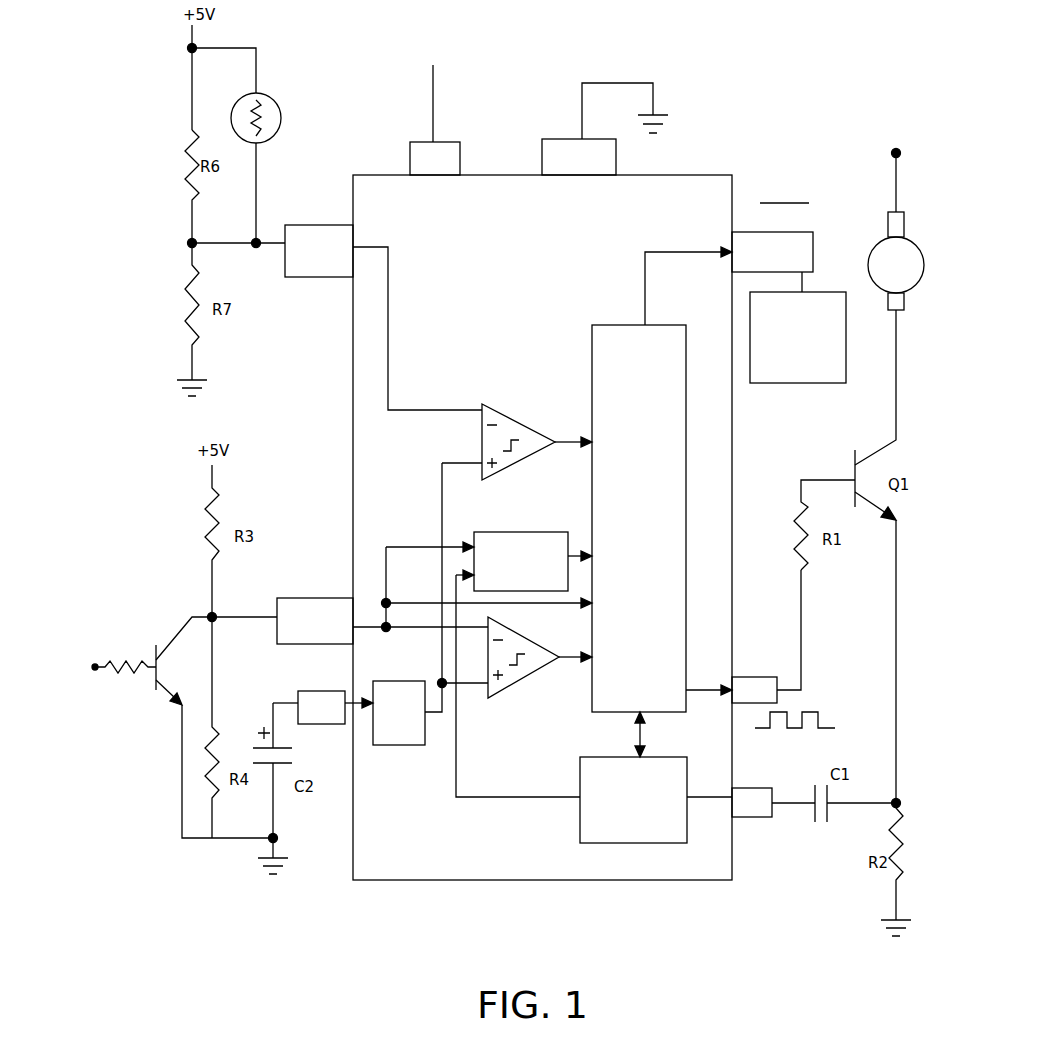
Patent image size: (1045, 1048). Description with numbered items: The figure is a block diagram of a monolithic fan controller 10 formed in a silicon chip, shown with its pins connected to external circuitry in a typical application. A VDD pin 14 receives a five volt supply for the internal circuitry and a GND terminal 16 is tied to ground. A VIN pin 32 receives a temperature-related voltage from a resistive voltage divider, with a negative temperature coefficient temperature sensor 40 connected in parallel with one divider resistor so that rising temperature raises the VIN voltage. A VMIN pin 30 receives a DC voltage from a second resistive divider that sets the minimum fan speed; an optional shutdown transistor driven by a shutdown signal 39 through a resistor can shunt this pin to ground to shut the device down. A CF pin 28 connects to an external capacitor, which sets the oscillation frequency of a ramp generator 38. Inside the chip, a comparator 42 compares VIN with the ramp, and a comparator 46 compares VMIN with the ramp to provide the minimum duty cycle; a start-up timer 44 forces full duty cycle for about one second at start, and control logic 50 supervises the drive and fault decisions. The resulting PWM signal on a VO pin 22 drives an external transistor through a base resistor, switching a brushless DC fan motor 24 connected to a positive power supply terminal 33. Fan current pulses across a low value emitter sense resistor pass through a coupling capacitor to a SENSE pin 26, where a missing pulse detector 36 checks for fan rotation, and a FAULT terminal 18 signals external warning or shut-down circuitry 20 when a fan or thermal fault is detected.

The fan controller 10 is at (750, 140).
The VDD pin 14 is at (460, 149).
The GND terminal 16 is at (616, 165).
The FAULT terminal 18 is at (813, 252).
The warning circuitry 20 is at (772, 383).
The VO pin 22 is at (766, 677).
The fan motor 24 is at (915, 249).
The SENSE pin 26 is at (772, 788).
The CF pin 28 is at (312, 724).
The VMIN pin 30 is at (314, 598).
The VIN pin 32 is at (297, 277).
The positive power supply terminal 33 is at (893, 153).
The missing pulse detector 36 is at (580, 840).
The ramp generator 38 is at (395, 745).
The shutdown signal 39 is at (97, 665).
The temperature sensor 40 is at (276, 137).
The comparator 42 is at (512, 419).
The start-up timer 44 is at (550, 532).
The comparator 46 is at (518, 698).
The control logic 50 is at (592, 343).